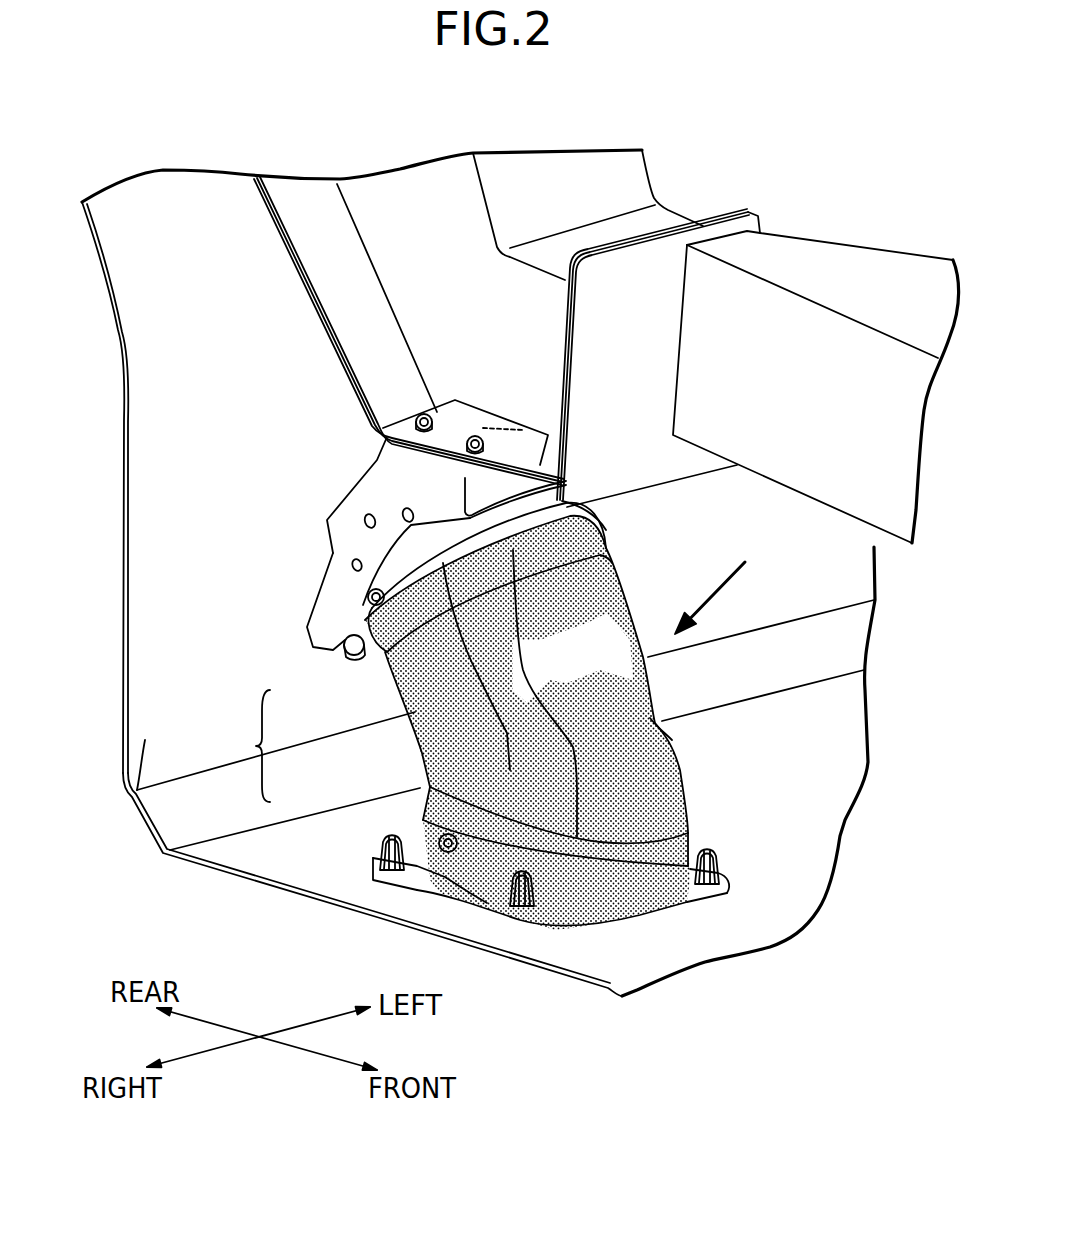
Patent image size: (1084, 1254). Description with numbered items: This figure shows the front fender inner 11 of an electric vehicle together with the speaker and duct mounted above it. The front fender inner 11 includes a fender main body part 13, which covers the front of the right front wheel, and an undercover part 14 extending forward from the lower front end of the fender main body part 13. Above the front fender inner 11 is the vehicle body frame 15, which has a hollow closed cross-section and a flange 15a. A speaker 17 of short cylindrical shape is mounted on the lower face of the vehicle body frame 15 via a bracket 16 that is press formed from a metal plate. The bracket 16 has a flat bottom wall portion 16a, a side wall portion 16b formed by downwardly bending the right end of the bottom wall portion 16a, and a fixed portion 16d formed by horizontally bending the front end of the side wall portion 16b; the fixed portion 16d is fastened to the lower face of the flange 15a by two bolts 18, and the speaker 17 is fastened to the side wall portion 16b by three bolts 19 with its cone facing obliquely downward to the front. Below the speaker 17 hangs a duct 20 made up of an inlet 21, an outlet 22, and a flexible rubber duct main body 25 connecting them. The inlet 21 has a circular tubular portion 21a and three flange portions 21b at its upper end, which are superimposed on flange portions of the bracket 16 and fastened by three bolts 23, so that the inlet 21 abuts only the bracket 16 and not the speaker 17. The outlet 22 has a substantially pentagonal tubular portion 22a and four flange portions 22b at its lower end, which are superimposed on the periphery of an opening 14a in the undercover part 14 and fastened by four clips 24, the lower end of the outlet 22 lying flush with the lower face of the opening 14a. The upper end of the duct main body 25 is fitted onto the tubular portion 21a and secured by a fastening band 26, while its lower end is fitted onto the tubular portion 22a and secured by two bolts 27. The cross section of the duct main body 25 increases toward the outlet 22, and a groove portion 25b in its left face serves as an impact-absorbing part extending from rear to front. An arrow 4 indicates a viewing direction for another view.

The viewing direction arrow 4 is at (722, 575).
The front fender inner 11 is at (55, 823).
The fender main body part 13 is at (137, 792).
The undercover part 14 is at (240, 860).
The opening 14a is at (537, 843).
The vehicle body frame 15 is at (660, 174).
The flange 15a is at (568, 413).
The bracket 16 is at (403, 499).
The bottom wall portion 16a is at (355, 490).
The side wall portion 16b is at (337, 573).
The fixed portion 16d is at (510, 432).
The speaker 17 is at (590, 522).
The bolts 18 is at (490, 427).
The bolts 19 is at (352, 562).
The duct 20 is at (508, 738).
The inlet 21 is at (460, 670).
The tubular portion 21a is at (561, 690).
The flange portions 21b is at (352, 627).
The outlet 22 is at (529, 862).
The tubular portion 22a is at (633, 890).
The flange portions 22b is at (470, 900).
The bolts 23 is at (348, 654).
The clips 24 is at (375, 840).
The duct main body 25 is at (524, 719).
The groove portion 25b is at (660, 724).
The fastening band 26 is at (506, 521).
The bolts 27 is at (445, 836).